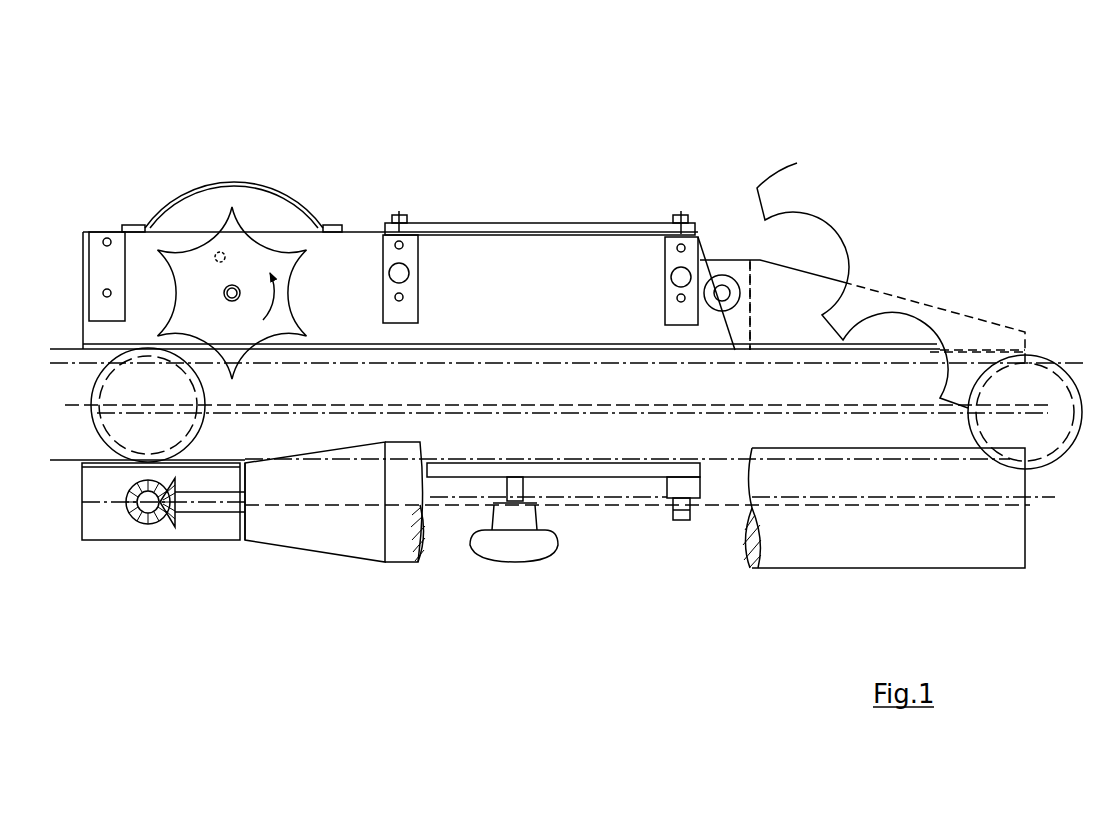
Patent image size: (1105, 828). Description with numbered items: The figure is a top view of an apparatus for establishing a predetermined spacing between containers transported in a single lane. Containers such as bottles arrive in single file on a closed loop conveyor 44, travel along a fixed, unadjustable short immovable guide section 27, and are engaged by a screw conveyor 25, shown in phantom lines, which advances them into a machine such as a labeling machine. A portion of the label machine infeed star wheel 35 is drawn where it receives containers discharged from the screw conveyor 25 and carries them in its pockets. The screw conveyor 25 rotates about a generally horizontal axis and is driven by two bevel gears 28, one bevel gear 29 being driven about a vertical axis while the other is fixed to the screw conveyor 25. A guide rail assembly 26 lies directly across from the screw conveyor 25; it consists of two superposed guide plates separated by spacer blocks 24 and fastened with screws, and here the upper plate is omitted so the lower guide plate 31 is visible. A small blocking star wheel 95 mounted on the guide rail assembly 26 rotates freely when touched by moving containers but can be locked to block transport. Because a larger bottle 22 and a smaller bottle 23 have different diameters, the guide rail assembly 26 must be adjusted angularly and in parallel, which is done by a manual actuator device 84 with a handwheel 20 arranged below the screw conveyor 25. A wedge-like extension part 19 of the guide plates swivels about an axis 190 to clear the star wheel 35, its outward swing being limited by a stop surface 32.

The extension part 19 is at (749, 268).
The handwheel 20 is at (525, 552).
The larger diameter bottle 22 is at (98, 435).
The smaller bottle 23 is at (108, 382).
The spacer blocks 24 is at (95, 237).
The screw conveyor 25 is at (277, 540).
The guide rail assembly 26 is at (453, 190).
The immovable guide section 27 is at (108, 465).
The bevel gears 28 is at (173, 548).
The bevel gear 29 is at (140, 520).
The lower guide plate 31 is at (354, 245).
The stop surface 32 is at (705, 270).
The infeed star wheel 35 is at (777, 192).
The closed loop conveyor 44 is at (72, 370).
The manual actuator device 84 is at (498, 570).
The blocking star wheel 95 is at (188, 258).
The axis 190 is at (731, 303).